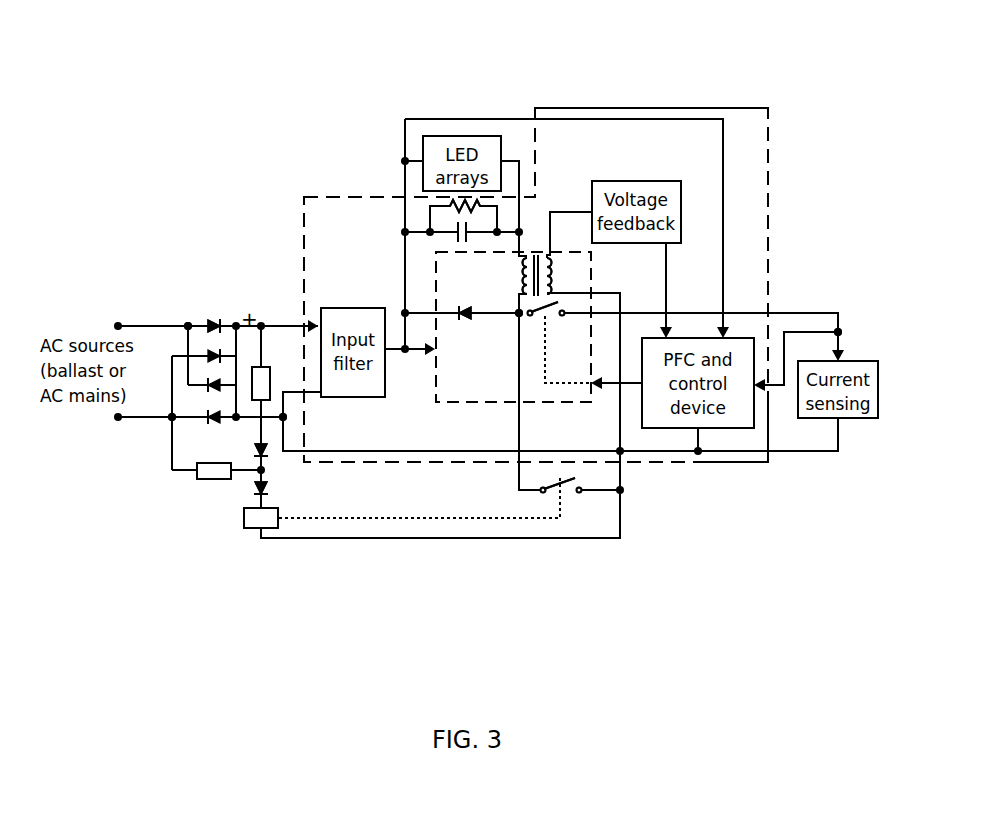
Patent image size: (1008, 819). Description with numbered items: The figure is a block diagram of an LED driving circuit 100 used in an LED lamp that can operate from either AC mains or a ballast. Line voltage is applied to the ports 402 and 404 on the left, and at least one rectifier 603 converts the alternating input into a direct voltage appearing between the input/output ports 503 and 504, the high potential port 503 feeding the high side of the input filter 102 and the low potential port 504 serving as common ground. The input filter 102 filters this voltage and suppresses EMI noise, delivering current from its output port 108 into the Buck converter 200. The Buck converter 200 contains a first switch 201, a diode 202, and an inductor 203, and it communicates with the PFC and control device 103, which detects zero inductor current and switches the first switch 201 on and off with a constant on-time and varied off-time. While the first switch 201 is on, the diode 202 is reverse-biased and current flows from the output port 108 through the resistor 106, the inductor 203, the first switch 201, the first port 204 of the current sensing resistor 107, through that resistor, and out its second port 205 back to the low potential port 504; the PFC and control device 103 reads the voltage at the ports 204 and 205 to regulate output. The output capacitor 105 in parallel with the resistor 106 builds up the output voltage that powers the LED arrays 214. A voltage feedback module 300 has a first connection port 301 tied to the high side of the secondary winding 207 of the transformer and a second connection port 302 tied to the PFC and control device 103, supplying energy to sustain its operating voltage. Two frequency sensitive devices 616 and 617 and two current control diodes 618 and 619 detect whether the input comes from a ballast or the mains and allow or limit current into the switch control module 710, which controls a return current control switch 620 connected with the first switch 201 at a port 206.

The LED driving circuit 100 is at (614, 98).
The input filter 102 is at (352, 307).
The PFC and control device 103 is at (680, 430).
The output capacitor 105 is at (452, 230).
The resistor 106 is at (450, 207).
The current sensing resistor 107 is at (852, 420).
The output port 108 is at (398, 352).
The Buck converter 200 is at (486, 415).
The first switch 201 is at (548, 318).
The diode 202 is at (465, 322).
The inductor 203 is at (522, 270).
The first port of the current sensing resistor 204 is at (840, 326).
The second port of the current sensing resistor 205 is at (755, 463).
The port 206 is at (518, 316).
The secondary winding 207 is at (550, 279).
The LED arrays 214 is at (443, 134).
The voltage feedback module 300 is at (659, 180).
The first connection port 301 is at (550, 210).
The second connection port 302 is at (668, 305).
The port 402 is at (186, 324).
The port 404 is at (171, 420).
The input/output port 503 is at (260, 322).
The input/output port 504 is at (285, 421).
The rectifier 603 is at (212, 310).
The frequency sensitive device 616 is at (271, 366).
The frequency sensitive device 617 is at (197, 480).
The current control diode 618 is at (257, 457).
The current control diode 619 is at (255, 491).
The return current control switch 620 is at (569, 493).
The switch control module 710 is at (256, 535).